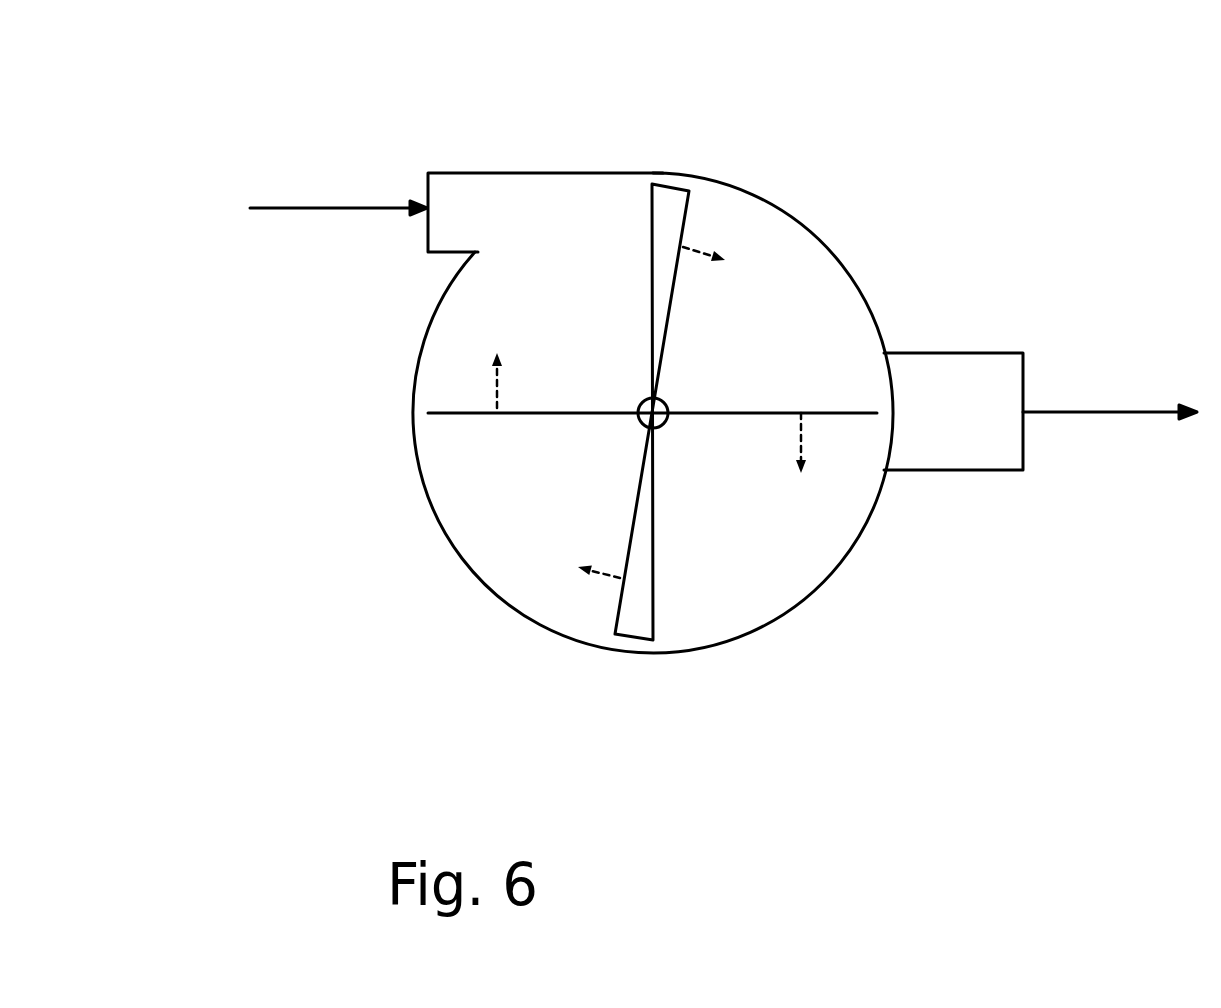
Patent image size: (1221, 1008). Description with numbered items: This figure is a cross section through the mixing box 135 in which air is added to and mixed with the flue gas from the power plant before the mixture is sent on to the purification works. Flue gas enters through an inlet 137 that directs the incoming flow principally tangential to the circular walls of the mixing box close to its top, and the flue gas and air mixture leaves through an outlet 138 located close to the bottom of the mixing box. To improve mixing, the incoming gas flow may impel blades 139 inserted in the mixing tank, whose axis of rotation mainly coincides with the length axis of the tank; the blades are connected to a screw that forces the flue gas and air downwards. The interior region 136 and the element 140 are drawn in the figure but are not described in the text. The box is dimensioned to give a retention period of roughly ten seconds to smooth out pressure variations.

The mixing box 135 is at (340, 522).
The blower chamber 136 is at (649, 412).
The inlet 137 is at (458, 166).
The outlet 138 is at (1040, 411).
The blades 139 is at (460, 408).
The impeller blade 140 is at (687, 222).